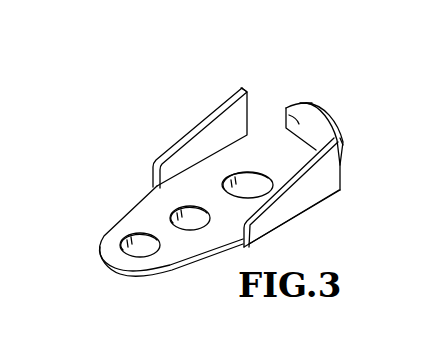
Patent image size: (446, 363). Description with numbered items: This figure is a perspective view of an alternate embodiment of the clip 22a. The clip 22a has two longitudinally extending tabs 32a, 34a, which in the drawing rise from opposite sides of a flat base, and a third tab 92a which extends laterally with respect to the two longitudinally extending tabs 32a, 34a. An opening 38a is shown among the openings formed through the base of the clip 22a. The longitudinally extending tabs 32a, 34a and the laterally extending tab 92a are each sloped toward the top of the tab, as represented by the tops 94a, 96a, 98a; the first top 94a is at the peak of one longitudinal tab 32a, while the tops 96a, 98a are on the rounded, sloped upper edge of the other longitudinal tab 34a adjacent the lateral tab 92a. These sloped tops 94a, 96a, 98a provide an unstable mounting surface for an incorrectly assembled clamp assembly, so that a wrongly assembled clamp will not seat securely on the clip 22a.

The clip 22a is at (167, 268).
The longitudinally extending tab 32a is at (185, 157).
The longitudinally extending tab 34a is at (304, 197).
The aperture 38a is at (247, 174).
The third tab 92a is at (298, 124).
The top 94a is at (241, 86).
The top 96a is at (334, 137).
The top 98a is at (305, 103).